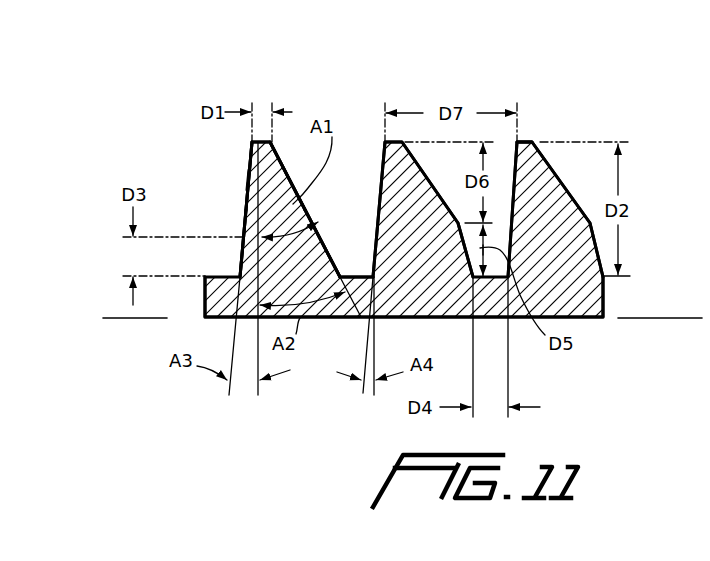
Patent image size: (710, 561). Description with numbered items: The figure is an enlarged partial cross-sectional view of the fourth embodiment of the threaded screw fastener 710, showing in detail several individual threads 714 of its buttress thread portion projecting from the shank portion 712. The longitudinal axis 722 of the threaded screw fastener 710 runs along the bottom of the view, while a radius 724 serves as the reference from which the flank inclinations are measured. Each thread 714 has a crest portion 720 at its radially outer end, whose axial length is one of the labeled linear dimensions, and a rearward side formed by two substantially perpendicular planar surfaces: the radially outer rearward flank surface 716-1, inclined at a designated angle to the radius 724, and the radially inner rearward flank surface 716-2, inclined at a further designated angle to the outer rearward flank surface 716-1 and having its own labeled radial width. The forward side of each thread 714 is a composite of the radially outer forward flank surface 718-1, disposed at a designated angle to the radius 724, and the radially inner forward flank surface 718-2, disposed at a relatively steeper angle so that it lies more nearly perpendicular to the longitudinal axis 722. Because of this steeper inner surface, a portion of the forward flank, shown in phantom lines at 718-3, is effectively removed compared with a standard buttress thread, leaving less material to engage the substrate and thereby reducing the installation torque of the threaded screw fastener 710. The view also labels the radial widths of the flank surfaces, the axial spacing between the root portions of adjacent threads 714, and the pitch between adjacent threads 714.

The threaded screw fastener 710 is at (586, 86).
The shank portion 712 is at (583, 300).
The thread 714 is at (278, 270).
The radially outer rearward flank surface 716-1 is at (246, 165).
The radially inner rearward flank surface 716-2 is at (242, 250).
The radially outer forward flank surface 718-1 is at (286, 150).
The radially inner forward flank surface 718-2 is at (345, 268).
The removed portion of the forward flank surface 718-3 is at (342, 282).
The crest portion 720 is at (528, 141).
The longitudinal axis 722 is at (668, 318).
The radius 724 is at (240, 179).